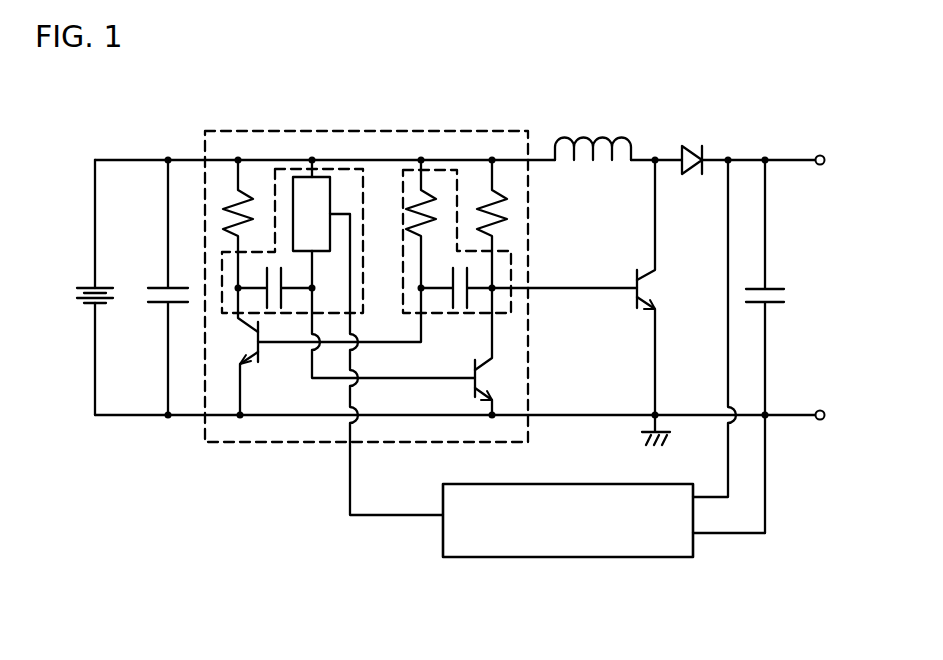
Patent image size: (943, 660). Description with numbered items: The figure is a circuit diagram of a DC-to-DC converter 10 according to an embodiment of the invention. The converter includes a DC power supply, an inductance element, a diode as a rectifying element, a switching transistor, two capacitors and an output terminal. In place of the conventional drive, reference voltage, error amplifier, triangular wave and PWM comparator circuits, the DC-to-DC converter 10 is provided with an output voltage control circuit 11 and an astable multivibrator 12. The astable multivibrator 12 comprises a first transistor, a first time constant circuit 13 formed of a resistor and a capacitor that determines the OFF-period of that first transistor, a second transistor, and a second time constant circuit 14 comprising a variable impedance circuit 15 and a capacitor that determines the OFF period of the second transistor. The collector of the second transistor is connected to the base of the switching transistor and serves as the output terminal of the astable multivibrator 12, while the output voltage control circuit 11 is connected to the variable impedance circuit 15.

The DC-to-DC converter 10 is at (490, 84).
The output voltage control circuit 11 is at (617, 557).
The astable multivibrator 12 is at (220, 130).
The first time constant circuit 13 is at (450, 162).
The second time constant circuit 14 is at (338, 160).
The variable impedance circuit 15 is at (305, 176).